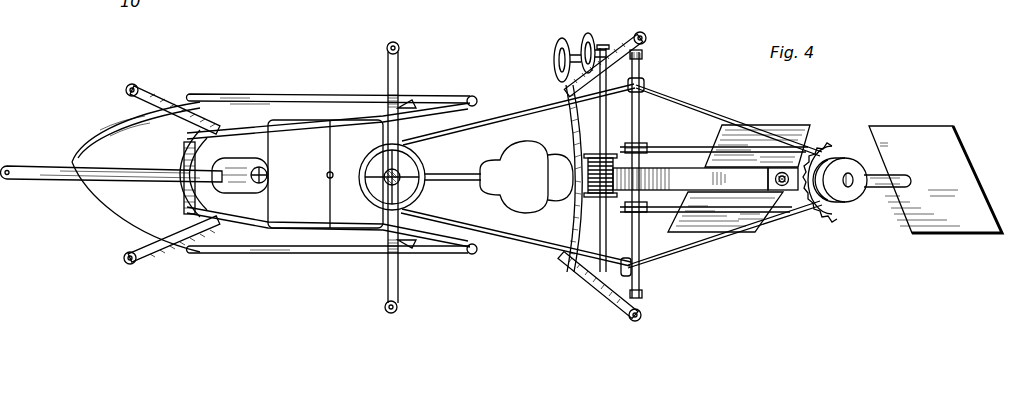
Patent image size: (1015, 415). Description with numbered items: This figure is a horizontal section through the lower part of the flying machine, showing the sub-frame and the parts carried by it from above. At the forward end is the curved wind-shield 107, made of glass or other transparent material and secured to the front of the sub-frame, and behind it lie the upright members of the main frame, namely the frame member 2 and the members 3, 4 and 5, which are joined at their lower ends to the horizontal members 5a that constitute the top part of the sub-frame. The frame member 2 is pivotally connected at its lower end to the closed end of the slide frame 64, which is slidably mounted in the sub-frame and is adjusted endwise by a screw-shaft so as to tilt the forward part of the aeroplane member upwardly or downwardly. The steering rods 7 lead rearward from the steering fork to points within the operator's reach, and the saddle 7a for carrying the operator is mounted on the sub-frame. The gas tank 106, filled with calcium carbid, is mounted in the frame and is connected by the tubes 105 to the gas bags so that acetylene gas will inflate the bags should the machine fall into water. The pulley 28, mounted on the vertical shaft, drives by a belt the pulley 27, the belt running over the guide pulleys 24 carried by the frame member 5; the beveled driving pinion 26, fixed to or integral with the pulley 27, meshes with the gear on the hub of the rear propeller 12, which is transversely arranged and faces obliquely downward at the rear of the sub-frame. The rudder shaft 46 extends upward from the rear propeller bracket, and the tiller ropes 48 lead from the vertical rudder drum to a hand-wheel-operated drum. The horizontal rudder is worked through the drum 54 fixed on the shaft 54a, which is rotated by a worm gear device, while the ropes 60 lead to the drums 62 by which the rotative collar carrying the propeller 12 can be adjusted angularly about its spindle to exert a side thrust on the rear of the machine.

The upright frame member 2 is at (22, 165).
The curved wind-shield 107 is at (104, 138).
The upright frame members 3 is at (140, 88).
The steering rods 7 is at (291, 92).
The horizontal frame members 5a is at (232, 124).
The slide frame 64 is at (247, 192).
The upright frame members 4 is at (400, 47).
The tiller ropes 48 is at (412, 118).
The pulley 28 is at (428, 166).
The saddle 7a is at (514, 177).
The gas tank 106 is at (561, 196).
The tubes 105 is at (578, 118).
The drum shaft 54a is at (558, 46).
The drum 54 is at (616, 153).
The ropes 60 is at (684, 153).
The guide pulleys 24 is at (642, 88).
The drums 62 is at (646, 146).
The upright frame members 5 is at (647, 37).
The rudder shaft 46 is at (784, 171).
The beveled driving pinion 26 is at (828, 147).
The pulley 27 is at (848, 197).
The rear propeller 12 is at (872, 131).